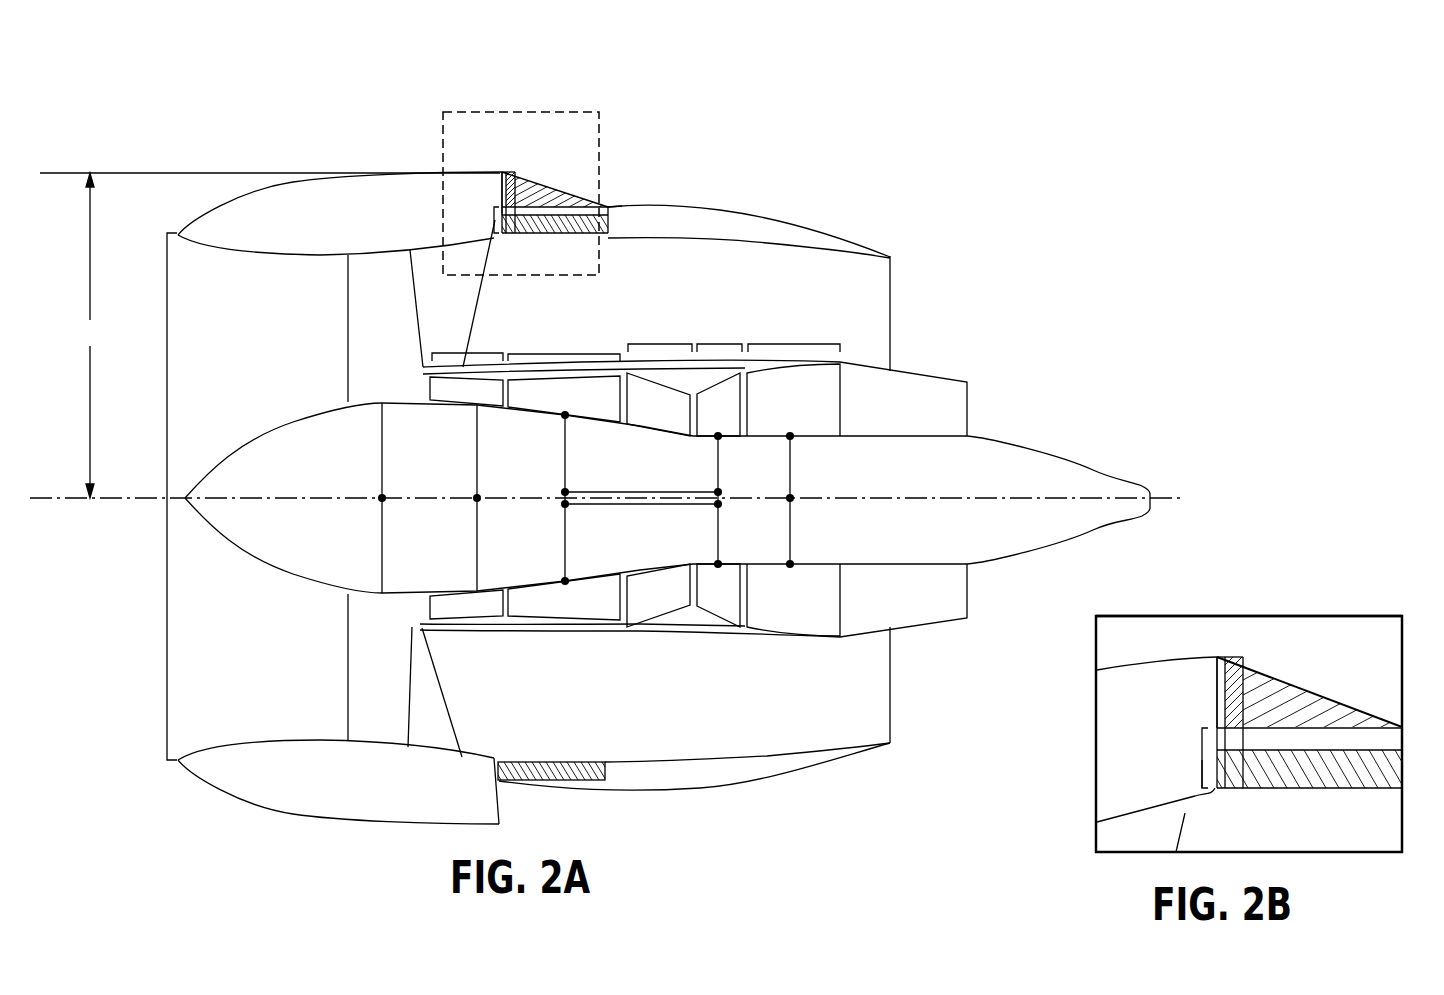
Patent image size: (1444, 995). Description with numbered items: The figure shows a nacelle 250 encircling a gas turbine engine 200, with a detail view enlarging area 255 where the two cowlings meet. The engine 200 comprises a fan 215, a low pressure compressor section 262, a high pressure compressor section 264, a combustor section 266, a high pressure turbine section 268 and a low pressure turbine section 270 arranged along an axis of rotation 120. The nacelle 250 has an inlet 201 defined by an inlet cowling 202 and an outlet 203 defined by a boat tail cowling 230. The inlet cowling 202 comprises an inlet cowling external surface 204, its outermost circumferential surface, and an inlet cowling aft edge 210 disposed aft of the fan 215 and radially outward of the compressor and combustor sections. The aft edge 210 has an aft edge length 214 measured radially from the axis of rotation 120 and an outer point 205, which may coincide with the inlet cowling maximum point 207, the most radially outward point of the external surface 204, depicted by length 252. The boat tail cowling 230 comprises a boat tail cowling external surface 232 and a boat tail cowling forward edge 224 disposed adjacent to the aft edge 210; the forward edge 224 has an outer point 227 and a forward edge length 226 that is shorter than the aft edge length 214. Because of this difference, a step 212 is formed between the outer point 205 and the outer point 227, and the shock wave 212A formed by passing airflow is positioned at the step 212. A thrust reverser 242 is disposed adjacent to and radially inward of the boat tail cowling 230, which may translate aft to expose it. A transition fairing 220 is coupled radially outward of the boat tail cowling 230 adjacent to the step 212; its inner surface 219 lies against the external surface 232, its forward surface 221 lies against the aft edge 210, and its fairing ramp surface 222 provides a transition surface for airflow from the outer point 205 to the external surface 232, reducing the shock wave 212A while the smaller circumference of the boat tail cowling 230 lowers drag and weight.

In FIG. 2A, the axis of rotation 120 is at (1125, 497).
In FIG. 2A, the gas turbine engine 200 is at (247, 397).
In FIG. 2A, the inlet 201 is at (166, 602).
In FIG. 2A, the inlet cowling 202 is at (275, 203).
In FIG. 2A, the outlet 203 is at (925, 282).
In FIG. 2A, the inlet cowling external surface 204 is at (351, 176).
In FIG. 2A, the outer point 205 is at (508, 172).
In FIG. 2B, the outer point 205 is at (1226, 658).
In FIG. 2A, the inlet cowling maximum point 207 is at (503, 172).
In FIG. 2B, the inlet cowling maximum point 207 is at (1216, 658).
In FIG. 2A, the inlet cowling aft edge 210 is at (500, 196).
In FIG. 2B, the inlet cowling aft edge 210 is at (1216, 693).
In FIG. 2A, the step 212 is at (550, 192).
In FIG. 2B, the step 212 is at (1308, 686).
In FIG. 2A, the shock wave 212A is at (503, 168).
In FIG. 2A, the aft edge length 214 is at (514, 211).
In FIG. 2B, the aft edge length 214 is at (1262, 745).
In FIG. 2A, the fan 215 is at (350, 322).
In FIG. 2A, the inner surface 219 is at (578, 214).
In FIG. 2B, the inner surface 219 is at (1312, 733).
In FIG. 2A, the transition fairing 220 is at (532, 199).
In FIG. 2B, the transition fairing 220 is at (1360, 718).
In FIG. 2A, the forward surface 221 is at (500, 183).
In FIG. 2B, the forward surface 221 is at (1216, 667).
In FIG. 2A, the fairing ramp surface 222 is at (594, 200).
In FIG. 2B, the fairing ramp surface 222 is at (1292, 686).
In FIG. 2A, the boat tail cowling forward edge 224 is at (494, 220).
In FIG. 2B, the boat tail cowling forward edge 224 is at (1202, 751).
In FIG. 2A, the forward edge length 226 is at (495, 223).
In FIG. 2B, the forward edge length 226 is at (1202, 766).
In FIG. 2A, the outer point 227 is at (495, 206).
In FIG. 2B, the outer point 227 is at (1216, 724).
In FIG. 2A, the boat tail cowling 230 is at (757, 236).
In FIG. 2A, the boat tail cowling external surface 232 is at (660, 207).
In FIG. 2A, the thrust reverser 242 is at (616, 206).
In FIG. 2A, the nacelle 250 is at (184, 177).
In FIG. 2A, the length 252 is at (87, 335).
In FIG. 2A, the area 255 is at (599, 112).
In FIG. 2B, the area 255 is at (1201, 616).
In FIG. 2A, the low pressure compressor section 262 is at (489, 352).
In FIG. 2A, the high pressure compressor section 264 is at (567, 353).
In FIG. 2A, the combustor section 266 is at (663, 344).
In FIG. 2A, the high pressure turbine section 268 is at (717, 344).
In FIG. 2A, the low pressure turbine section 270 is at (792, 344).